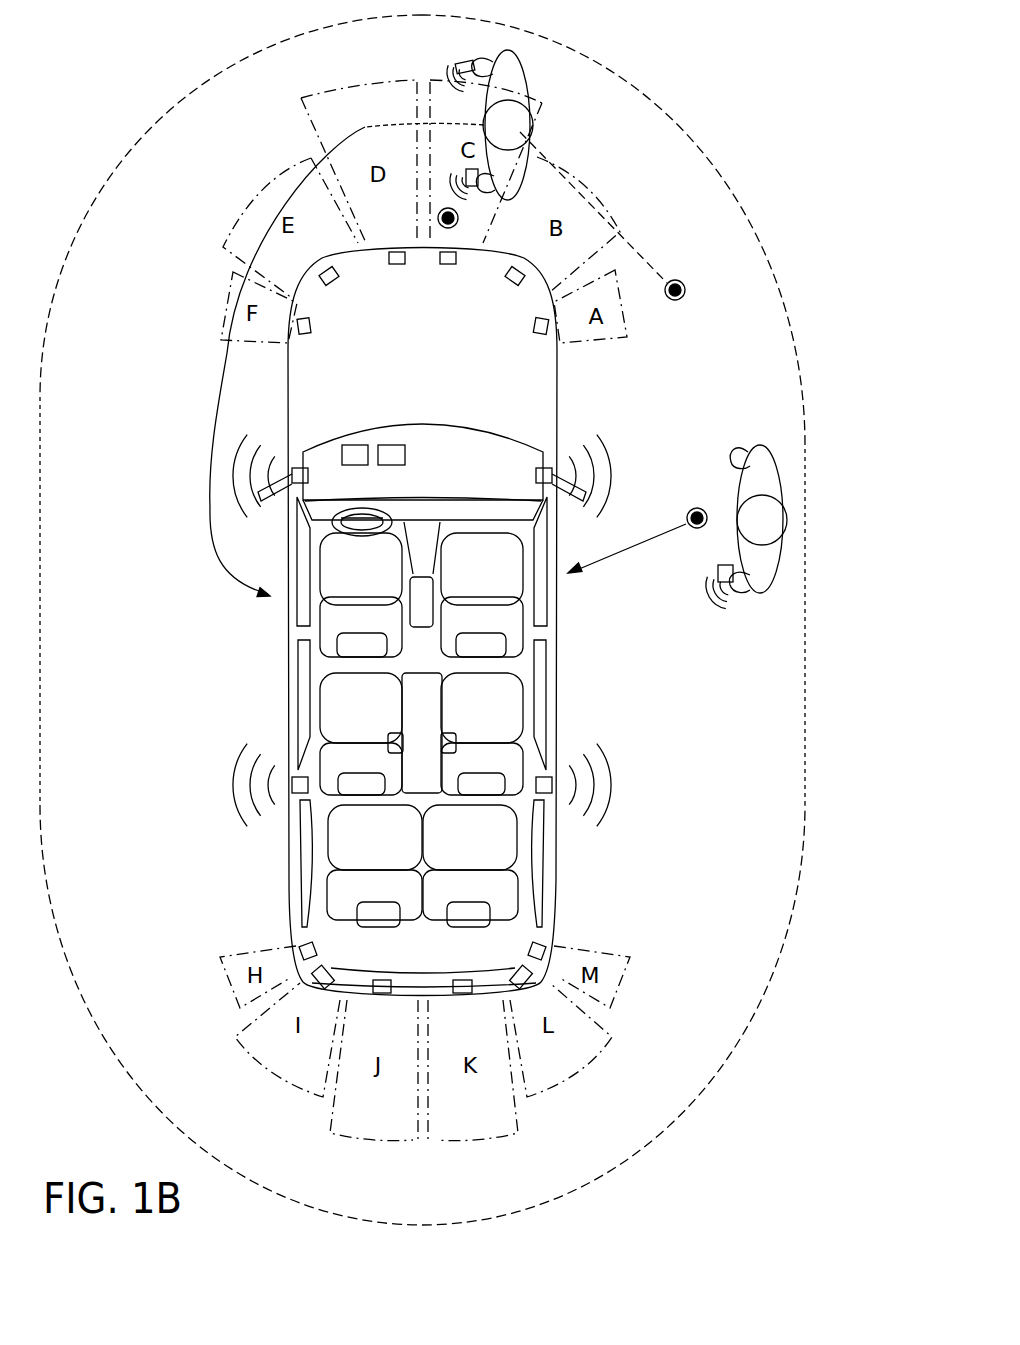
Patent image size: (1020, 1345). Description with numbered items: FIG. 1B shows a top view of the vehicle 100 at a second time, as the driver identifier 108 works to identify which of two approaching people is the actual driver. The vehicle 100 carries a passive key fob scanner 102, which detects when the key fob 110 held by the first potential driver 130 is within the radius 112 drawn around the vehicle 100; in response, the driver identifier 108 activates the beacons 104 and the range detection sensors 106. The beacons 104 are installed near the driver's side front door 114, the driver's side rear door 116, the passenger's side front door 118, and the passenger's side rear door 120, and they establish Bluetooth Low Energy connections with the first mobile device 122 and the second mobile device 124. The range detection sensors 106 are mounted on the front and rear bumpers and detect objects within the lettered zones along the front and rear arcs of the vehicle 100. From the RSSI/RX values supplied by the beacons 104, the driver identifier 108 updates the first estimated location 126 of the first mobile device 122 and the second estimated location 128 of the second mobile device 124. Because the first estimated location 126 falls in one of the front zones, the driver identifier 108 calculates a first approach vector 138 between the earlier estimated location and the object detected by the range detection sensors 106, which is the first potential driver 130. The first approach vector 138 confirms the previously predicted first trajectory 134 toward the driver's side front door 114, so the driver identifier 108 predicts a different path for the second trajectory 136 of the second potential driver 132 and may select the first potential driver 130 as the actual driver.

The vehicle 100 is at (558, 378).
The passive key fob scanner 102 is at (393, 444).
The beacons 104 is at (300, 466).
The range detection sensors 106 is at (397, 265).
The driver identifier 108 is at (355, 444).
The key fob 110 is at (457, 62).
The radius 112 is at (660, 96).
The driver's side front door 114 is at (290, 558).
The driver's side rear door 116 is at (290, 730).
The passenger's side front door 118 is at (554, 550).
The passenger's side rear door 120 is at (554, 684).
The first mobile device 122 is at (466, 172).
The second mobile device 124 is at (726, 585).
The first estimated location 126 is at (438, 214).
The second estimated location 128 is at (696, 508).
The first potential driver 130 is at (534, 126).
The second potential driver 132 is at (788, 518).
The first trajectory 134 is at (208, 494).
The second trajectory 136 is at (632, 549).
The first approach vector 138 is at (637, 245).